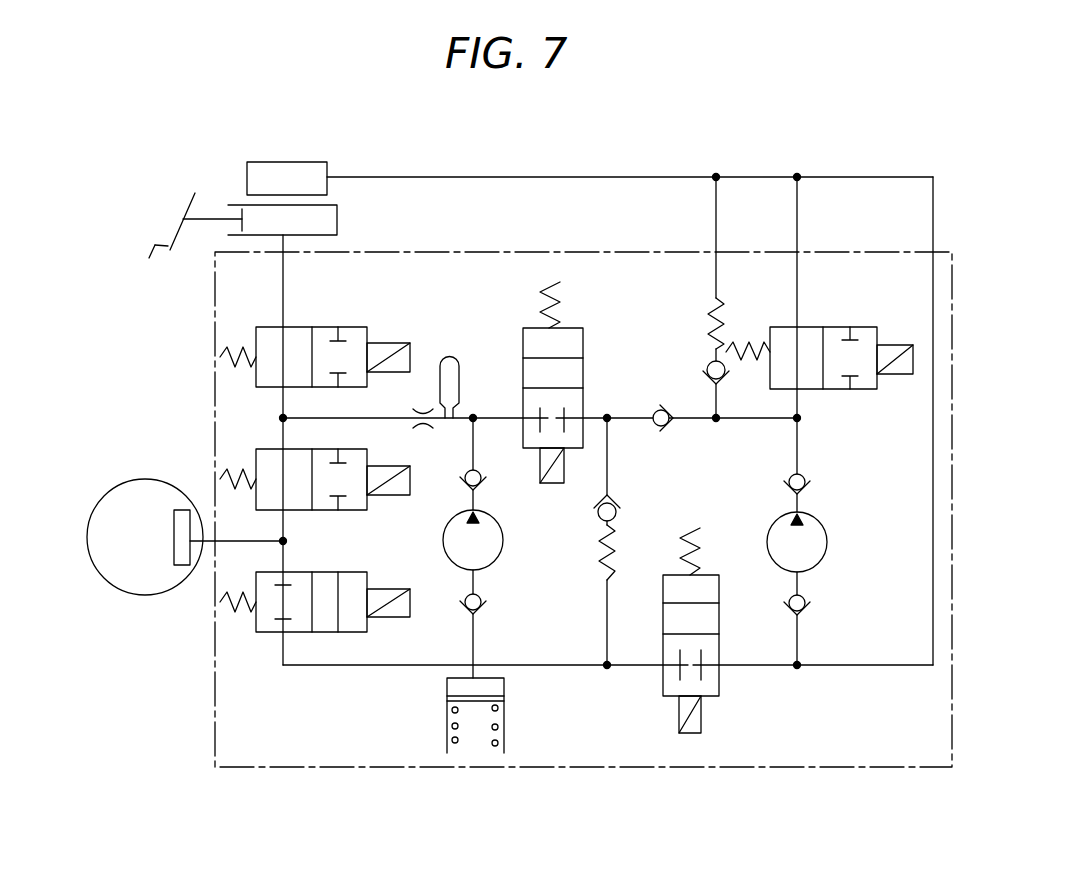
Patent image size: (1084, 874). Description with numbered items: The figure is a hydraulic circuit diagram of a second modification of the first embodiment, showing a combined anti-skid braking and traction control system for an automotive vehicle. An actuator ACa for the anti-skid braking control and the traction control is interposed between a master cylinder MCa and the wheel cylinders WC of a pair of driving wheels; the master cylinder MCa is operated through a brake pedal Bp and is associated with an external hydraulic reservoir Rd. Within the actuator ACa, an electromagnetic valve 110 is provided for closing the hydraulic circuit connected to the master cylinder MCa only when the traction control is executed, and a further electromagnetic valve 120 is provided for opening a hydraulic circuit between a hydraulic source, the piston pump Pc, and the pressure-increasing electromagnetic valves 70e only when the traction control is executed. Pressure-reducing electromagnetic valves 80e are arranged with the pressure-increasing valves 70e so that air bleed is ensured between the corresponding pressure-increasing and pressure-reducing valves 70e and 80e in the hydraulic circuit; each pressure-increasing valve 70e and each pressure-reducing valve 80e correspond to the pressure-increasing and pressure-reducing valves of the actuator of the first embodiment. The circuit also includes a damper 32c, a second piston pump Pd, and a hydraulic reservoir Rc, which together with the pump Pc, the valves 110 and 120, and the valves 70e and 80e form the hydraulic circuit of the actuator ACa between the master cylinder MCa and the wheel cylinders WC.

The external hydraulic reservoir Rd is at (329, 165).
The master cylinder MCa is at (339, 210).
The brake pedal Bp is at (177, 232).
The electromagnetic valve 110 is at (262, 326).
The pressure-increasing electromagnetic valve 70e is at (262, 448).
The pressure-reducing electromagnetic valve 80e is at (262, 634).
The wheel cylinder WC is at (186, 536).
The damper 32c is at (449, 356).
The electromagnetic valve 120 is at (572, 327).
The piston pump Pd is at (495, 522).
The piston pump Pc is at (813, 522).
The hydraulic reservoir Rc is at (447, 707).
The actuator ACa is at (903, 772).